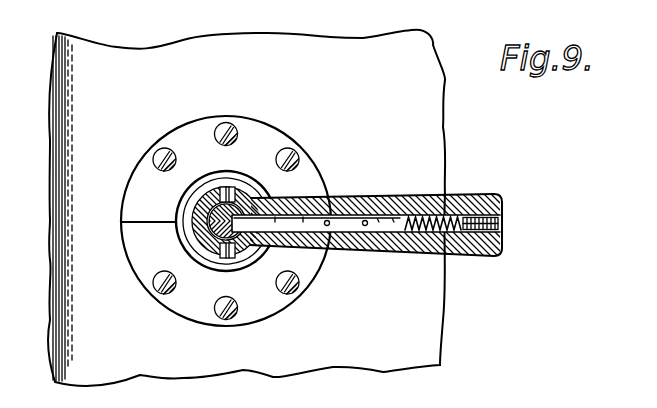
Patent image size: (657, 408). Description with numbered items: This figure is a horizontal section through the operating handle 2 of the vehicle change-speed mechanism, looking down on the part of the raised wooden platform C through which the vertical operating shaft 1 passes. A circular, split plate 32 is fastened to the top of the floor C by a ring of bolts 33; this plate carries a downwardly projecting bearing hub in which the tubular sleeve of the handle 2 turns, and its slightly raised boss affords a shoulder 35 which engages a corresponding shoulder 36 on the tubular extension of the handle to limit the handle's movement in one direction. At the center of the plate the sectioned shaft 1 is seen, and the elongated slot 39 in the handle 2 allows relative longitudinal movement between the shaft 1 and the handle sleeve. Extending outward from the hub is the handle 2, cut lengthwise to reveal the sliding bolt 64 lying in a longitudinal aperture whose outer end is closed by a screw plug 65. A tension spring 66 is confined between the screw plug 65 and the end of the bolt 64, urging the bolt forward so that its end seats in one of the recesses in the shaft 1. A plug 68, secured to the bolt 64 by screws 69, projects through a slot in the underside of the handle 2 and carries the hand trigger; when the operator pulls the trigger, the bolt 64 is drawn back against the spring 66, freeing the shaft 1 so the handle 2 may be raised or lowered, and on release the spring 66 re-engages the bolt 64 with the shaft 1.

The operating shaft 1 is at (205, 253).
The handle 2 is at (413, 241).
The circular split plate 32 is at (293, 334).
The bolts 33 is at (172, 166).
The shoulder 35 is at (188, 253).
The shoulder 36 is at (187, 233).
The elongated slot 39 is at (229, 250).
The sliding bolt 64 is at (320, 198).
The screw plug 65 is at (484, 241).
The tension spring 66 is at (440, 215).
The plug 68 is at (388, 208).
The screws 69 is at (364, 226).
The raised platform C is at (246, 208).